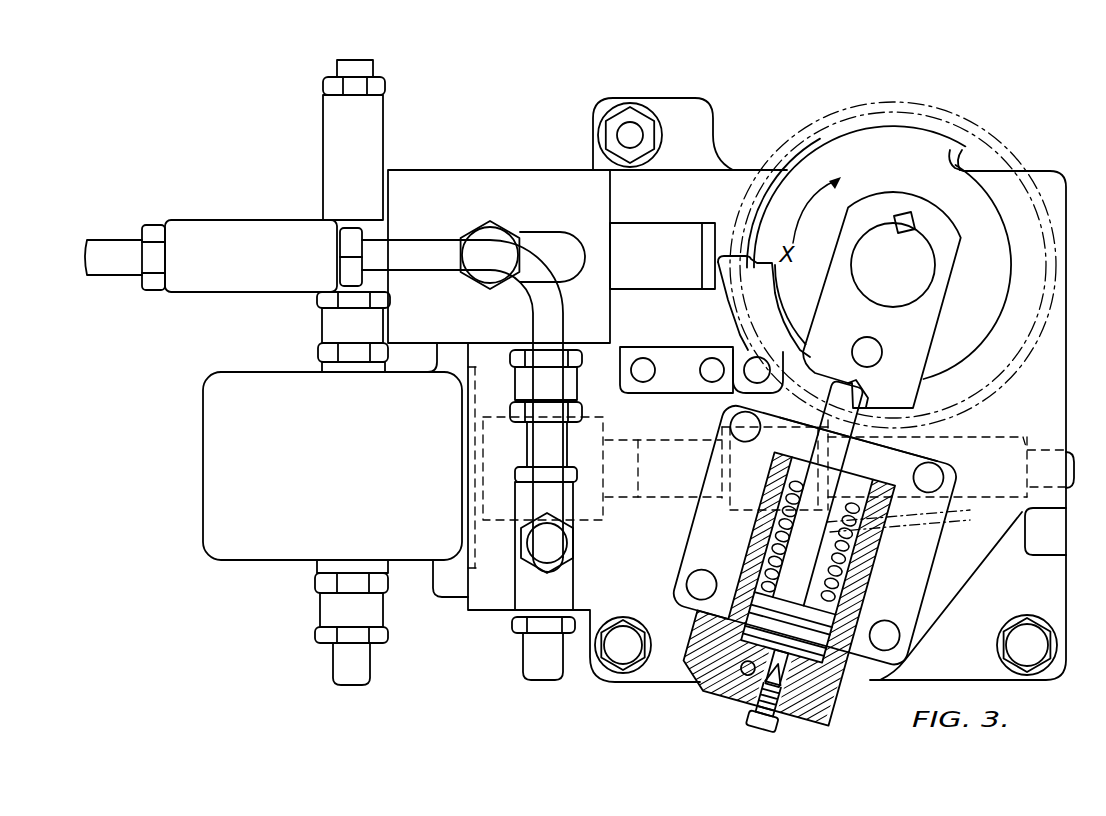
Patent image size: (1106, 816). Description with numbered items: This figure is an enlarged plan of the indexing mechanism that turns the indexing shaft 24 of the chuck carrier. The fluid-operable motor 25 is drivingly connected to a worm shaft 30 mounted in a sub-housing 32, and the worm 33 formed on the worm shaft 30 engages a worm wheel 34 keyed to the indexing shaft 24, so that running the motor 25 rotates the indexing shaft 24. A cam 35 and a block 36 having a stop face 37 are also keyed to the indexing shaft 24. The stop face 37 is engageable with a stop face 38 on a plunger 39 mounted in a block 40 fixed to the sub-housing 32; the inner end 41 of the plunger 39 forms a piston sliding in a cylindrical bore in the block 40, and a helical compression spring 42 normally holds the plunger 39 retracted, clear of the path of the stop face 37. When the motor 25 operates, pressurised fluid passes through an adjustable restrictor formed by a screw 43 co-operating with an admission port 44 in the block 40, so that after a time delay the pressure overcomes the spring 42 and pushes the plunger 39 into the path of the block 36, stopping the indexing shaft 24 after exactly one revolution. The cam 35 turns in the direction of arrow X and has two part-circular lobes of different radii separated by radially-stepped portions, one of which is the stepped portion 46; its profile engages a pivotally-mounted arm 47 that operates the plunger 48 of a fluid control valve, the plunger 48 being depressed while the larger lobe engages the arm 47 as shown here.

The indexing shaft 24 is at (917, 267).
The fluid-operable motor 25 is at (338, 492).
The worm shaft 30 is at (1013, 447).
The sub-housing 32 is at (1052, 593).
The worm 33 is at (943, 418).
The worm wheel 34 is at (1053, 293).
The cam 35 is at (908, 138).
The block 36 is at (920, 317).
The stop face 37 is at (852, 383).
The stop face 38 is at (855, 404).
The plunger 39 is at (863, 430).
The block 40 is at (745, 540).
The inner end 41 is at (752, 593).
The helical compression spring 42 is at (857, 527).
The screw 43 is at (750, 713).
The admission port 44 is at (817, 690).
The radially-stepped portion 46 is at (958, 158).
The pivotally-mounted arm 47 is at (727, 312).
The plunger 48 is at (638, 265).